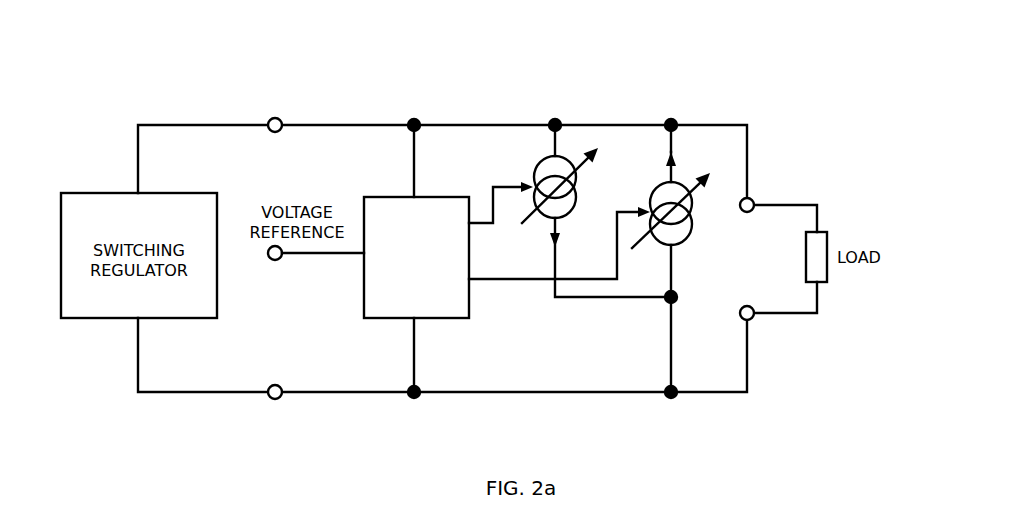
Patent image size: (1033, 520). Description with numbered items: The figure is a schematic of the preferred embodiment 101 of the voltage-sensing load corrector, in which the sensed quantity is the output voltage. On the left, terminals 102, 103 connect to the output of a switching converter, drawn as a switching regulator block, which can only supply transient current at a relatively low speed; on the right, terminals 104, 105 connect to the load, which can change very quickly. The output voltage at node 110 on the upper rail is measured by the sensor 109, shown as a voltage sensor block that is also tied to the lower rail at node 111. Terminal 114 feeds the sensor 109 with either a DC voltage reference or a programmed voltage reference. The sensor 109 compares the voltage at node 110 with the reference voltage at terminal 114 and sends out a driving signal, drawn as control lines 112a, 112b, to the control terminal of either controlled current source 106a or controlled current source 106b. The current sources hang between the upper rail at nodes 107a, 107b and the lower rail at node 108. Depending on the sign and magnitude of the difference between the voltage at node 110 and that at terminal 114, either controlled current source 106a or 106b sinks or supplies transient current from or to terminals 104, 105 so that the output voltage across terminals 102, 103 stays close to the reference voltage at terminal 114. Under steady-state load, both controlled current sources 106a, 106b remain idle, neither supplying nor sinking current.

The preferred embodiment of the voltage-sensing load corrector 101 is at (498, 100).
The terminal 102 is at (275, 112).
The terminal 103 is at (275, 408).
The terminal 104 is at (767, 192).
The terminal 105 is at (768, 325).
The controlled current source 106a is at (596, 222).
The controlled current source 106b is at (684, 227).
The first node 107a is at (561, 124).
The second node 107b is at (675, 122).
The return node 108 is at (671, 363).
The sensor 109 is at (416, 257).
The node 110 is at (414, 145).
The voltage sensor reference node 111 is at (416, 375).
The first control signal 112a is at (501, 218).
The second control signal 112b is at (559, 256).
The terminal 114 is at (311, 269).